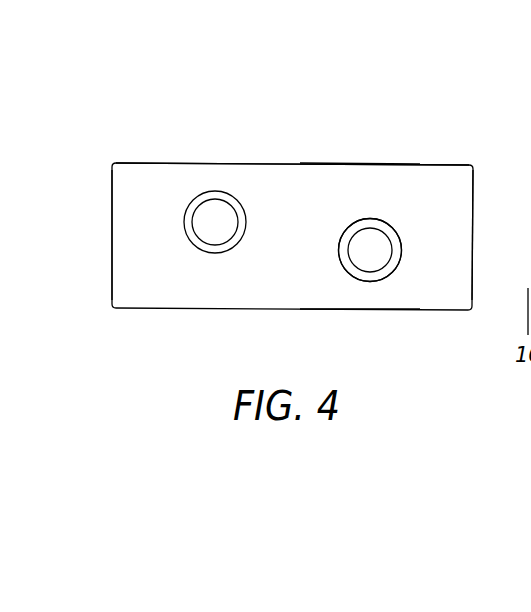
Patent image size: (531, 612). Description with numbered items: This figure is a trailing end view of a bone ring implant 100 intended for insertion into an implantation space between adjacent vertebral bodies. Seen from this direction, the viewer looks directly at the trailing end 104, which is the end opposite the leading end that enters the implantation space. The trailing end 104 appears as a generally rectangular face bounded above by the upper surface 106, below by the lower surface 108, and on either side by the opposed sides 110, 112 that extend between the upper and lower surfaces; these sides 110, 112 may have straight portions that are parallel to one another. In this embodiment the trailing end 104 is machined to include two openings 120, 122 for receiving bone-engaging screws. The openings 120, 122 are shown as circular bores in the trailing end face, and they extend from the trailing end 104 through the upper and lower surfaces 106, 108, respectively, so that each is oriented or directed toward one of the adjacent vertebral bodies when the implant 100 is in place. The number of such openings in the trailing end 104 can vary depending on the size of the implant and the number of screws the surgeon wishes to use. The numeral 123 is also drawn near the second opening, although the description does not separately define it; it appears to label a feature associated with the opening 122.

The bone ring implant 100 is at (272, 105).
The trailing end 104 is at (296, 292).
The upper surface 106 is at (360, 163).
The lower surface 108 is at (367, 310).
The side 110 is at (475, 222).
The side 112 is at (112, 222).
The opening 120 is at (215, 230).
The opening 122 is at (372, 250).
The ring 123 is at (349, 268).